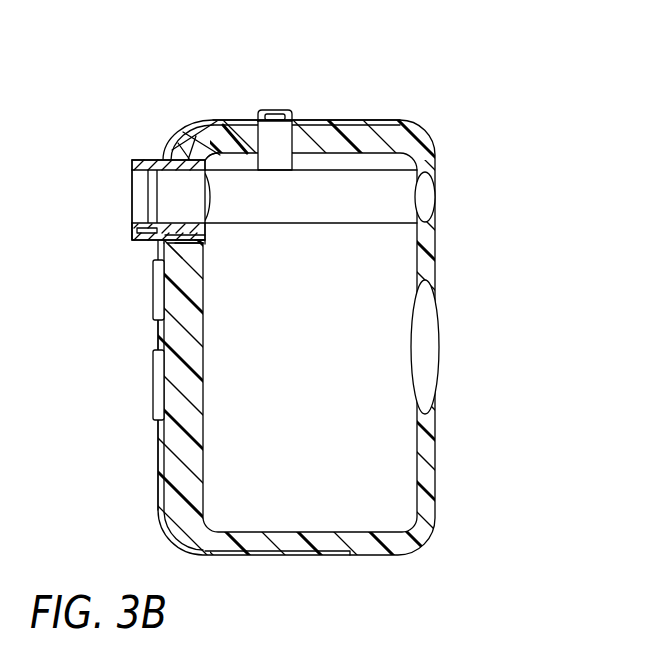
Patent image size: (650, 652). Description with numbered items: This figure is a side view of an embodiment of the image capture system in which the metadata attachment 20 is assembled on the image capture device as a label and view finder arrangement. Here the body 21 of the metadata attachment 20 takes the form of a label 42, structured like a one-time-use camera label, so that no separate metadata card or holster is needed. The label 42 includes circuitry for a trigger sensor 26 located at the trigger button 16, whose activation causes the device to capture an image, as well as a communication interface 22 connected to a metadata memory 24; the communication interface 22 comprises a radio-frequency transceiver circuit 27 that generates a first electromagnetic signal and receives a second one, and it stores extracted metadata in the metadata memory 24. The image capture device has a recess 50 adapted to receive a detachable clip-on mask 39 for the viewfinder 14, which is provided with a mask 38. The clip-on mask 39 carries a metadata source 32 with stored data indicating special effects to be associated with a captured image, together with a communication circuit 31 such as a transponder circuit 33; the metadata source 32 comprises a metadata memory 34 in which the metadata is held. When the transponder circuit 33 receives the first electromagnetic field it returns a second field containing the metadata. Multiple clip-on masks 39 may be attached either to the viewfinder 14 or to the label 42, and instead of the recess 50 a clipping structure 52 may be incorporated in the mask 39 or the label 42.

The viewfinder 14 is at (416, 195).
The trigger button 16 is at (330, 124).
The metadata attachment 20 is at (150, 486).
The body 21 is at (168, 140).
The communication interface circuit 22 is at (148, 327).
The metadata memory 24 is at (153, 390).
The trigger sensor 26 is at (272, 112).
The radio-frequency transceiver circuit 27 is at (153, 293).
The communication circuit 31 is at (120, 249).
The metadata source 32 is at (205, 239).
The transponder circuit 33 is at (132, 233).
The metadata memory 34 is at (218, 254).
The mask 38 is at (132, 203).
The clip-on mask 39 is at (120, 165).
The label 42 is at (302, 555).
The recess 50 is at (201, 170).
The clipping structure 52 is at (176, 152).